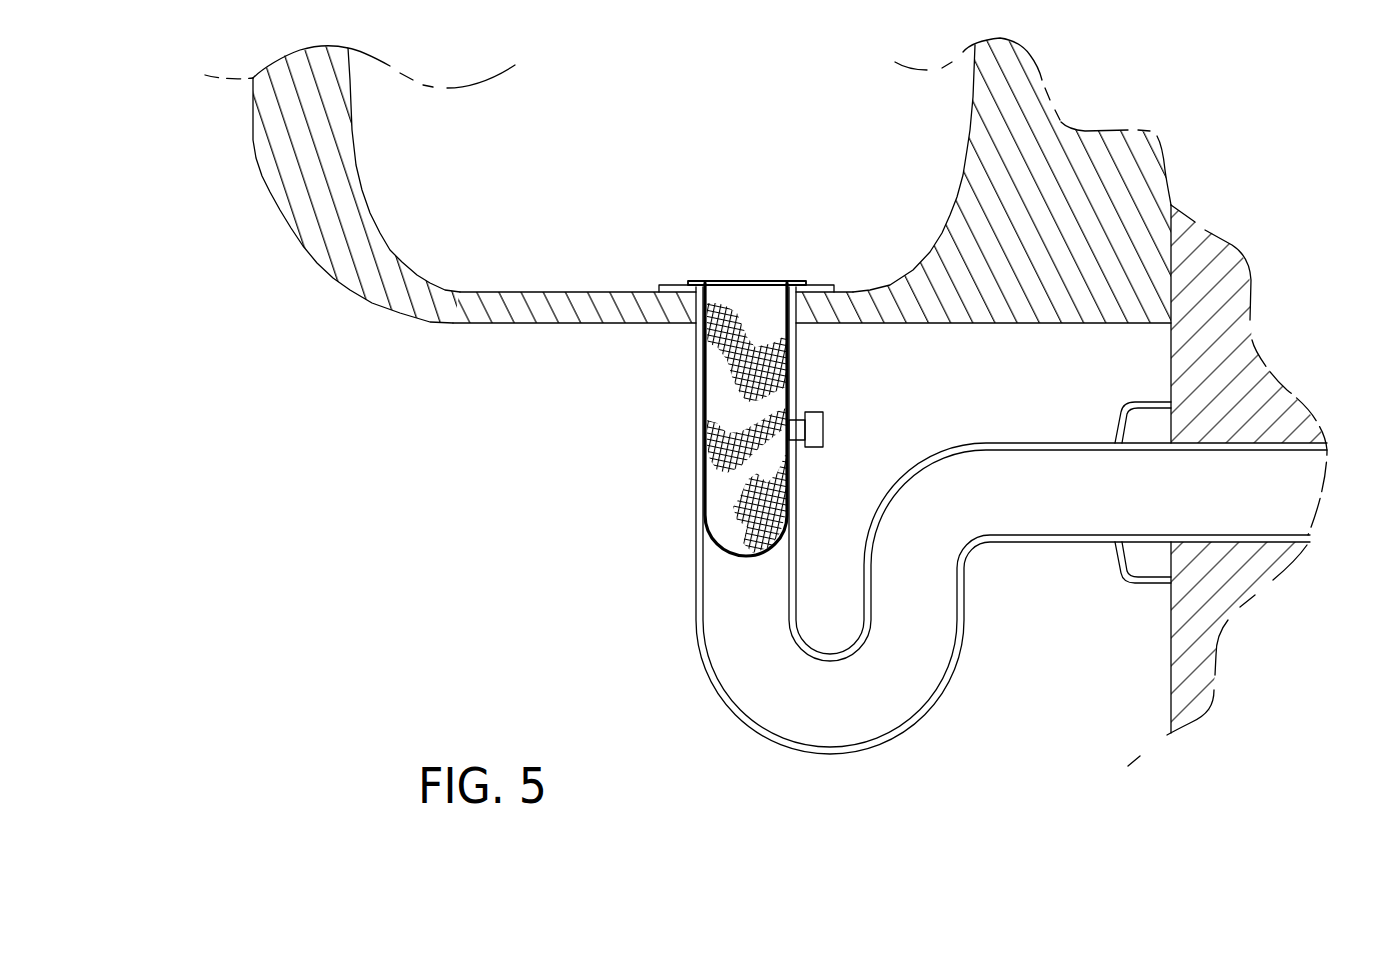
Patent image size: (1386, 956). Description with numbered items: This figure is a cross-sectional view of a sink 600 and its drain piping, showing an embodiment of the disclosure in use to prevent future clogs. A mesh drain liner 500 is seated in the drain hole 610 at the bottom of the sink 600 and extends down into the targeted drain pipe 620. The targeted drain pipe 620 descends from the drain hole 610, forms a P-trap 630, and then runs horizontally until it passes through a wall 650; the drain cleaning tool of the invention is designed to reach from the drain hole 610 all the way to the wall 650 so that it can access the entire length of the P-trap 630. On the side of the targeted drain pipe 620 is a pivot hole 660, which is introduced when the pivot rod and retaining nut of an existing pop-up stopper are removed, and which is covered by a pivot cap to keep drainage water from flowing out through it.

The mesh drain liner 500 is at (655, 280).
The sink 600 is at (337, 281).
The drain hole 610 is at (802, 296).
The targeted drain pipe 620 is at (697, 646).
The P-trap 630 is at (705, 778).
The wall 650 is at (1236, 248).
The pivot hole 660 is at (797, 447).